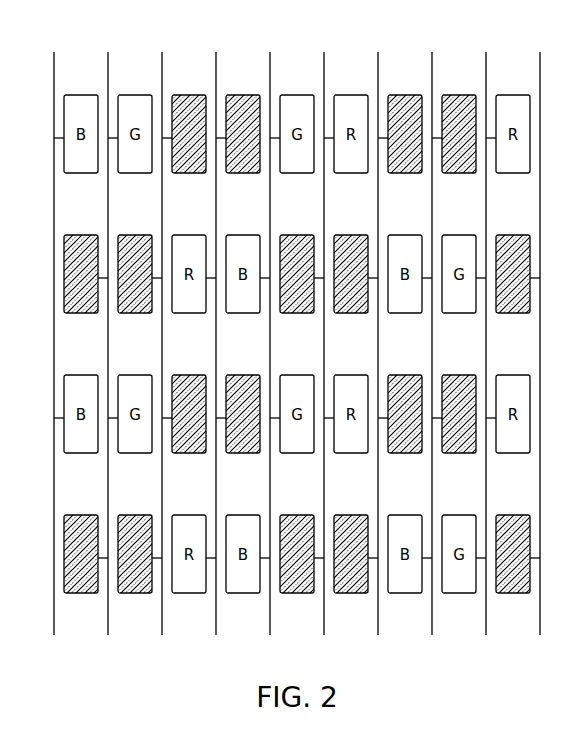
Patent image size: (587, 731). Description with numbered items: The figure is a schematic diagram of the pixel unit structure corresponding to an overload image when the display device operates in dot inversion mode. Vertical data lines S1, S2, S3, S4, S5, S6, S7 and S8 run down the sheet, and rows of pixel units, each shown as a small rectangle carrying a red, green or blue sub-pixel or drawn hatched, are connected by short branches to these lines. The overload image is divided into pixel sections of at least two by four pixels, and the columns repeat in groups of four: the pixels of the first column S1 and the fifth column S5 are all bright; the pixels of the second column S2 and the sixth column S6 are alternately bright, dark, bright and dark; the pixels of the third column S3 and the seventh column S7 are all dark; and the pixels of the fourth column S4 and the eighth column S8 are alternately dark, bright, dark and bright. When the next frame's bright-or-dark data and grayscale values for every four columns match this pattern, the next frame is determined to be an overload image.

The first data line S1 is at (58, 326).
The second data line S2 is at (112, 326).
The third data line S3 is at (166, 326).
The fourth data line S4 is at (220, 326).
The fifth data line S5 is at (274, 326).
The sixth data line S6 is at (328, 326).
The seventh data line S7 is at (382, 326).
The eighth data line S8 is at (436, 326).